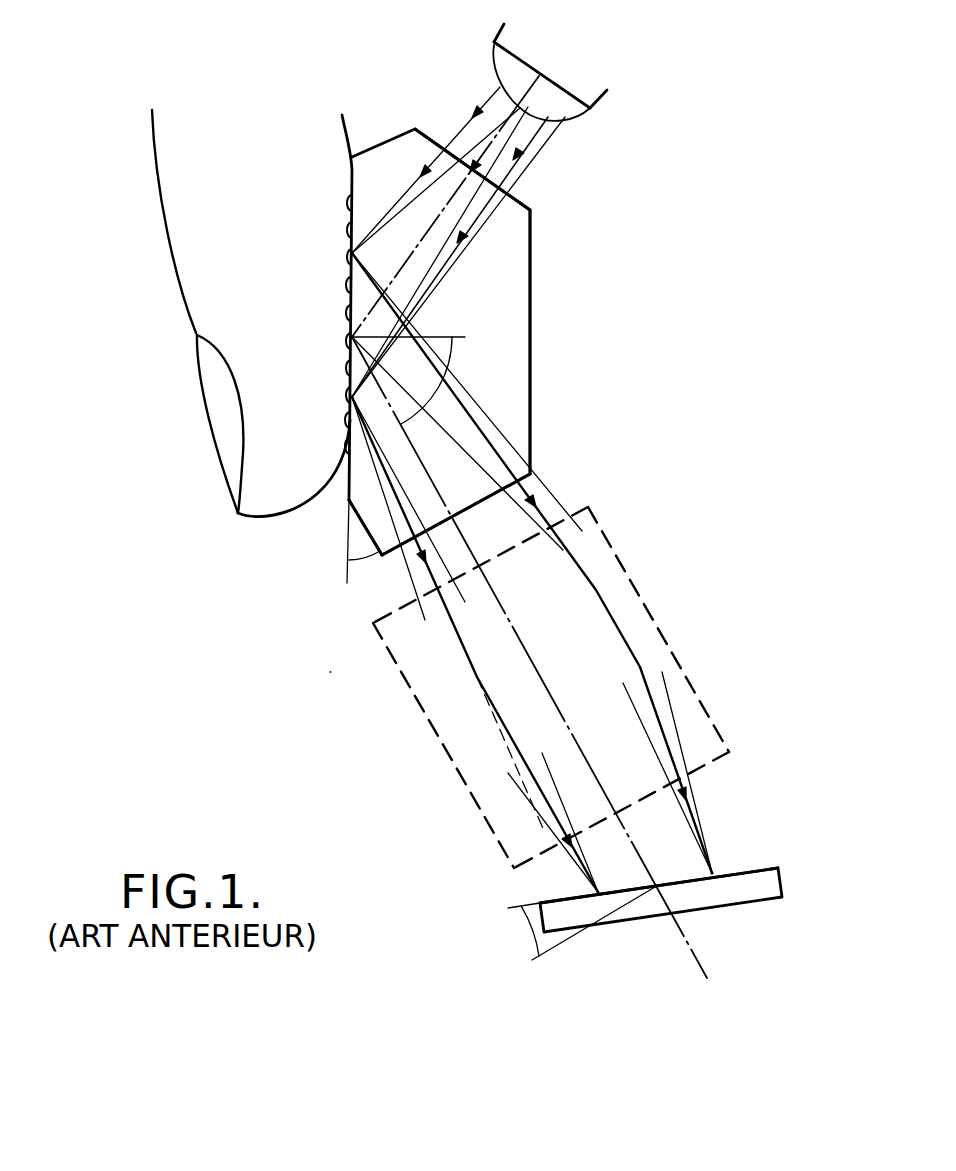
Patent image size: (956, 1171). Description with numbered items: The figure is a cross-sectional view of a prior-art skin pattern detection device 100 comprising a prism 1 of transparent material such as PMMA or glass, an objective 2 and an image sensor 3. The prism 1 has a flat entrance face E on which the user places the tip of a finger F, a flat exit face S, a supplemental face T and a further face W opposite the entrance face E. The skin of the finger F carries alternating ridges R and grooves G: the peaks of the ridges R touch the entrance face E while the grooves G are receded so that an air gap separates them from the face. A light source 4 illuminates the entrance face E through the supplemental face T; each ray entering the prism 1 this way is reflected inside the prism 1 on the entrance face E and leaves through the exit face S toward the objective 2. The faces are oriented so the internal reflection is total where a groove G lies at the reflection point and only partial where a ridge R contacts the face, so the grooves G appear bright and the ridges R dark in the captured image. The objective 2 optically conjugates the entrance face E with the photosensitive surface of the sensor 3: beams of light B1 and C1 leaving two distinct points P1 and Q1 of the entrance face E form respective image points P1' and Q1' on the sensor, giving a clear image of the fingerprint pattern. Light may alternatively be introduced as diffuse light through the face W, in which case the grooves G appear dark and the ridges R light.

The skin pattern detection device 100 is at (333, 670).
The finger F is at (193, 198).
The prism of transparent material 1 is at (503, 275).
The supplemental face T is at (525, 203).
The exit face S is at (395, 553).
The entrance face E is at (345, 487).
The face opposite the entrance face W is at (532, 334).
The ridges R is at (345, 238).
The grooves G is at (342, 368).
The point of the entrance face Q1 is at (314, 264).
The point of the entrance face P1 is at (323, 413).
The light source 4 is at (507, 63).
The objective 2 is at (606, 534).
The image sensor 3 is at (710, 900).
The beam of light C1 is at (503, 433).
The beam of light B1 is at (420, 508).
The image point P1' is at (619, 868).
The image point Q1' is at (737, 831).